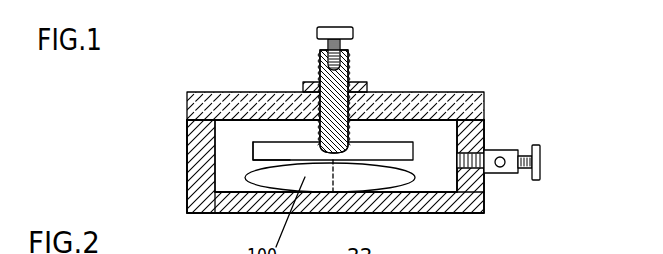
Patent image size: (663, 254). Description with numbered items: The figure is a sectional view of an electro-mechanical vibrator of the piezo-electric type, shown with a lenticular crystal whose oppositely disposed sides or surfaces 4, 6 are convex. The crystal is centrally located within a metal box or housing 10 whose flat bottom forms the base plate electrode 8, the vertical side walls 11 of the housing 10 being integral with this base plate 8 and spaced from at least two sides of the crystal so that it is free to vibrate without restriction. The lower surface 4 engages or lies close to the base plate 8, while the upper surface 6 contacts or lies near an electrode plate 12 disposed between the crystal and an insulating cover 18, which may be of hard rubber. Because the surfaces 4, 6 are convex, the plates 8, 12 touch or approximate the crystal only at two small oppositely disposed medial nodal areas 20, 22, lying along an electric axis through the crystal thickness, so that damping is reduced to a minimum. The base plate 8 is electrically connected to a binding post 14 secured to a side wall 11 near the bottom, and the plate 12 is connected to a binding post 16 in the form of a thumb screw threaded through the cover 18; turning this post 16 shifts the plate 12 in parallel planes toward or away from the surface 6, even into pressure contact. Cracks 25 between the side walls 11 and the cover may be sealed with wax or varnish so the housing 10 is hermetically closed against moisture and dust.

The side or surface of the crystal 4 is at (270, 190).
The side or surface of the crystal 6 is at (270, 161).
The base plate electrode 8 is at (393, 212).
The metal box, container or housing 10 is at (487, 149).
The side walls of the housing 11 is at (200, 157).
The electrode plate 12 is at (413, 149).
The binding post 14 is at (541, 158).
The binding post 16 is at (352, 78).
The insulating cover 18 is at (225, 100).
The contact point or small area 20 is at (330, 194).
The contact point or small area 22 is at (333, 160).
The cracks 25 is at (187, 119).